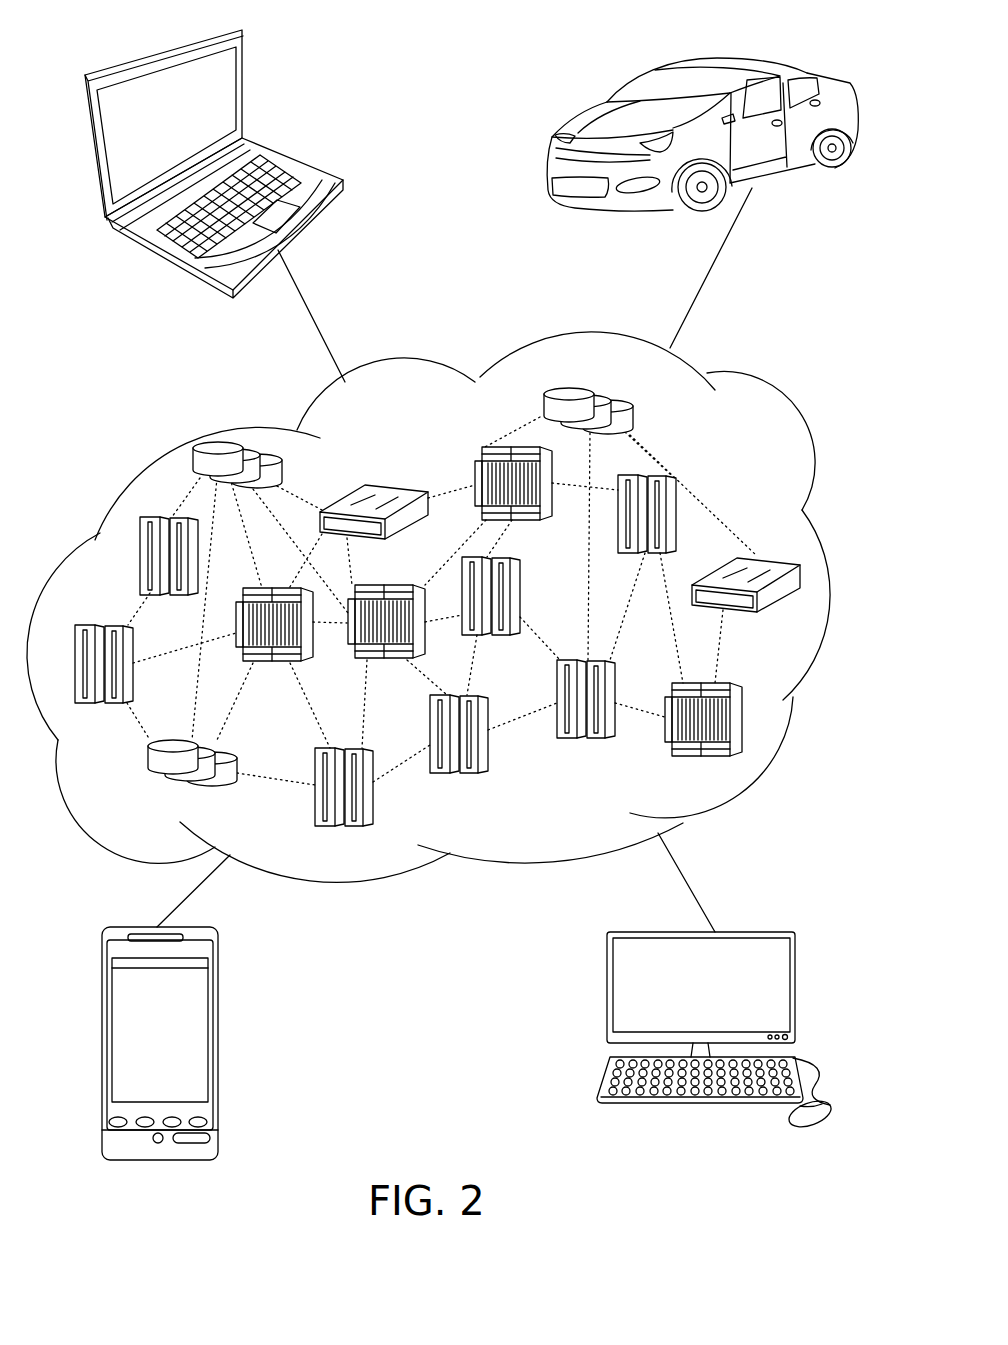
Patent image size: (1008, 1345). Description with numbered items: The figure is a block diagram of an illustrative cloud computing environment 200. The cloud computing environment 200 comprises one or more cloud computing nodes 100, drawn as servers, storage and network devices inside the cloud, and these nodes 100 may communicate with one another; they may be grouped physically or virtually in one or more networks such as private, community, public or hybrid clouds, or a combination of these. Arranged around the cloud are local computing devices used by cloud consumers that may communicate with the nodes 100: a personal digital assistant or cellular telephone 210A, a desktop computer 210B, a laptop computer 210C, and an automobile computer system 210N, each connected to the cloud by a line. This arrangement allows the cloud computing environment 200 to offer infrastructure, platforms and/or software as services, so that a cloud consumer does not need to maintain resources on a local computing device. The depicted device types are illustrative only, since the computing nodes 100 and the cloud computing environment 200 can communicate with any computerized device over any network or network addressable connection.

The cloud computing node 100 is at (773, 535).
The cloud computing environment 200 is at (777, 400).
The personal digital assistant or cellular telephone 210A is at (213, 952).
The desktop computer 210B is at (797, 950).
The laptop computer 210C is at (300, 162).
The automobile computer system 210N is at (812, 73).